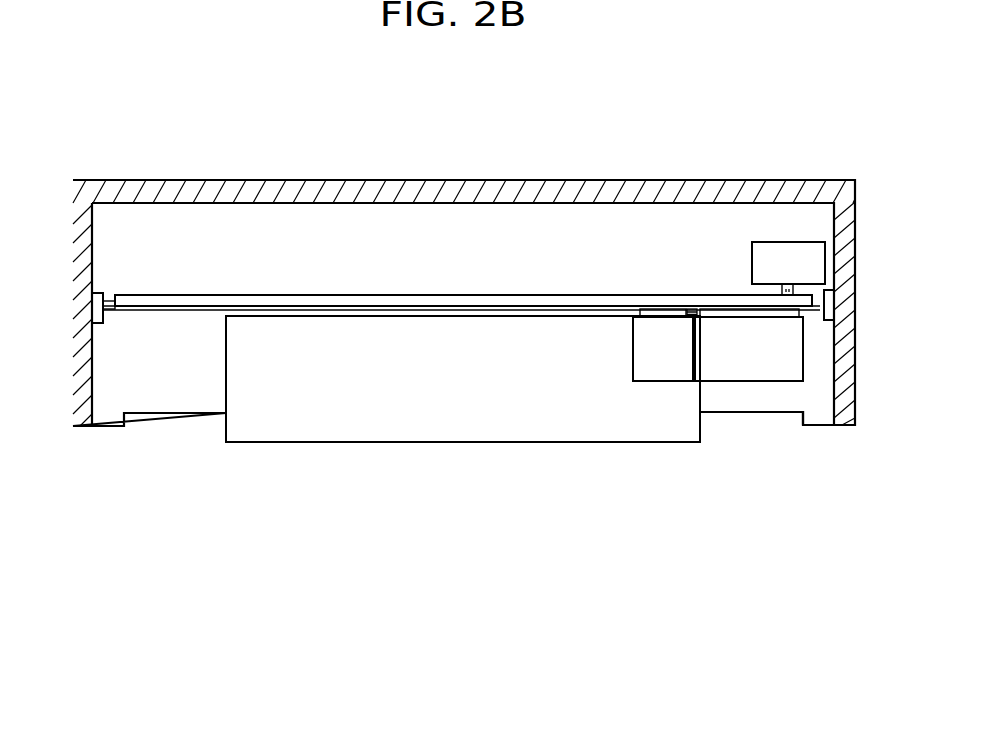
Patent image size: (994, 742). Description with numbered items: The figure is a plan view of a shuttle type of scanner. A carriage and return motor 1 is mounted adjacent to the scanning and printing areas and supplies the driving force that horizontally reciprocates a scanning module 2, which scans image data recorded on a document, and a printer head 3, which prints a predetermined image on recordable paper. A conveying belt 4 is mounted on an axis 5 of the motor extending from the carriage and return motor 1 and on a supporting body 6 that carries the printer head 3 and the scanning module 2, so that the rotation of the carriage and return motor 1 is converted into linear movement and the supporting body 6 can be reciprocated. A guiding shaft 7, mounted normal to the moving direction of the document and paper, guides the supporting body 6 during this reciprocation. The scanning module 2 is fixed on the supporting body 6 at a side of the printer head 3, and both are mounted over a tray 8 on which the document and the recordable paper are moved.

The carriage and return motor 1 is at (817, 268).
The scanning module 2 is at (664, 372).
The printer head 3 is at (759, 369).
The conveying belt 4 is at (173, 303).
The axis of motor 5 is at (794, 289).
The supporting body 6 is at (714, 385).
The guiding shaft 7 is at (155, 317).
The tray 8 is at (183, 405).